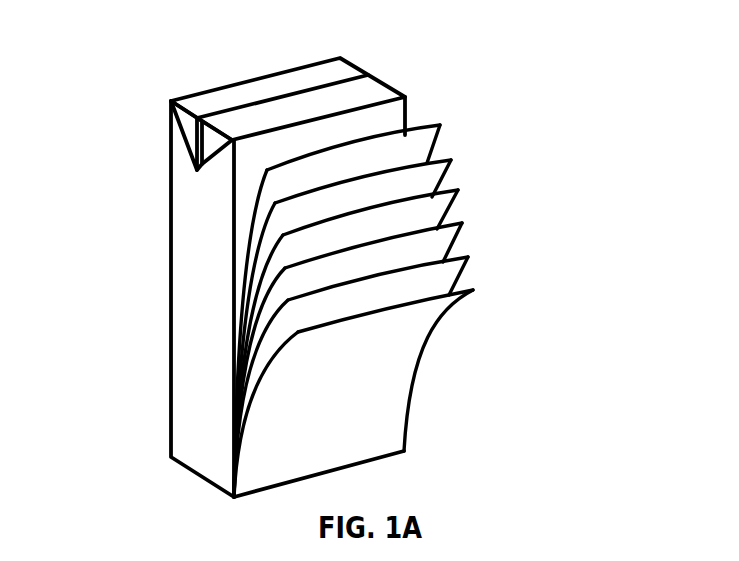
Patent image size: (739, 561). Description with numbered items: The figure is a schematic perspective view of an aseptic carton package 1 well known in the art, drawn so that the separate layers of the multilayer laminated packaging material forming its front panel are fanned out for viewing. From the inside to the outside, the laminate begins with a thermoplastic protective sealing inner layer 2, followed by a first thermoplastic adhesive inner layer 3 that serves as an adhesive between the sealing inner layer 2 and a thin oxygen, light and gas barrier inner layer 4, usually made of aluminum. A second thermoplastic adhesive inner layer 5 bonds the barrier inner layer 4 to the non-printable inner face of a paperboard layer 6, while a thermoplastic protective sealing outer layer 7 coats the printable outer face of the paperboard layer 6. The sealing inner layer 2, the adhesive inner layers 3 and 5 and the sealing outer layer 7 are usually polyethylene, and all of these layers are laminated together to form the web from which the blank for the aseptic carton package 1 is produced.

The aseptic carton package 1 is at (120, 83).
The thermoplastic protective sealing inner layer 2 is at (420, 145).
The first thermoplastic adhesive inner layer 3 is at (437, 180).
The oxygen, light and gas barrier inner layer 4 is at (437, 203).
The second thermoplastic adhesive inner layer 5 is at (440, 240).
The paperboard layer 6 is at (437, 277).
The thermoplastic protective sealing outer layer 7 is at (428, 317).